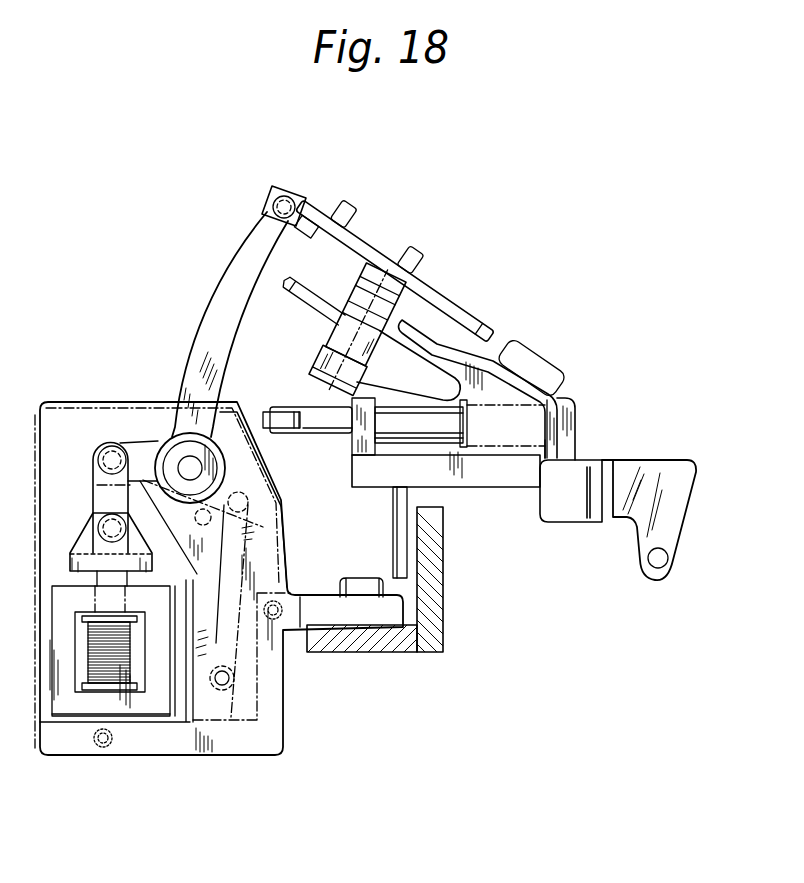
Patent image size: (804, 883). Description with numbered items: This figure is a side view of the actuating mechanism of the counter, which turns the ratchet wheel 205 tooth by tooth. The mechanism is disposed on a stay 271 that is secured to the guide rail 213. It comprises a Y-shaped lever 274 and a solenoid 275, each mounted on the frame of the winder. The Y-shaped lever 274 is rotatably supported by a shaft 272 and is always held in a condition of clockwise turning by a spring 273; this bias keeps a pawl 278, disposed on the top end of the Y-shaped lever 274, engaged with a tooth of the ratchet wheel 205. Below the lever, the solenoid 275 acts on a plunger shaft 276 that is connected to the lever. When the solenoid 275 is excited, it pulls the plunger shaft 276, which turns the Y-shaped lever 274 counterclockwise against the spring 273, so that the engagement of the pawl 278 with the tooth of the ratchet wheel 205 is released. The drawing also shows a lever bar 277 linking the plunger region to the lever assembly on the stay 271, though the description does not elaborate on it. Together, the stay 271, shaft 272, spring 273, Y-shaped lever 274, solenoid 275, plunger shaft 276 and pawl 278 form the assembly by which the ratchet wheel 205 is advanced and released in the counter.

The ratchet wheel 205 is at (435, 297).
The guide rail 213 is at (443, 590).
The stay 271 is at (283, 686).
The shaft 272 is at (190, 465).
The spring 273 is at (280, 550).
The Y-shaped lever 274 is at (288, 358).
The solenoid 275 is at (97, 657).
The plunger shaft 276 is at (102, 575).
The lever bar 277 is at (102, 493).
The pawl 278 is at (292, 228).